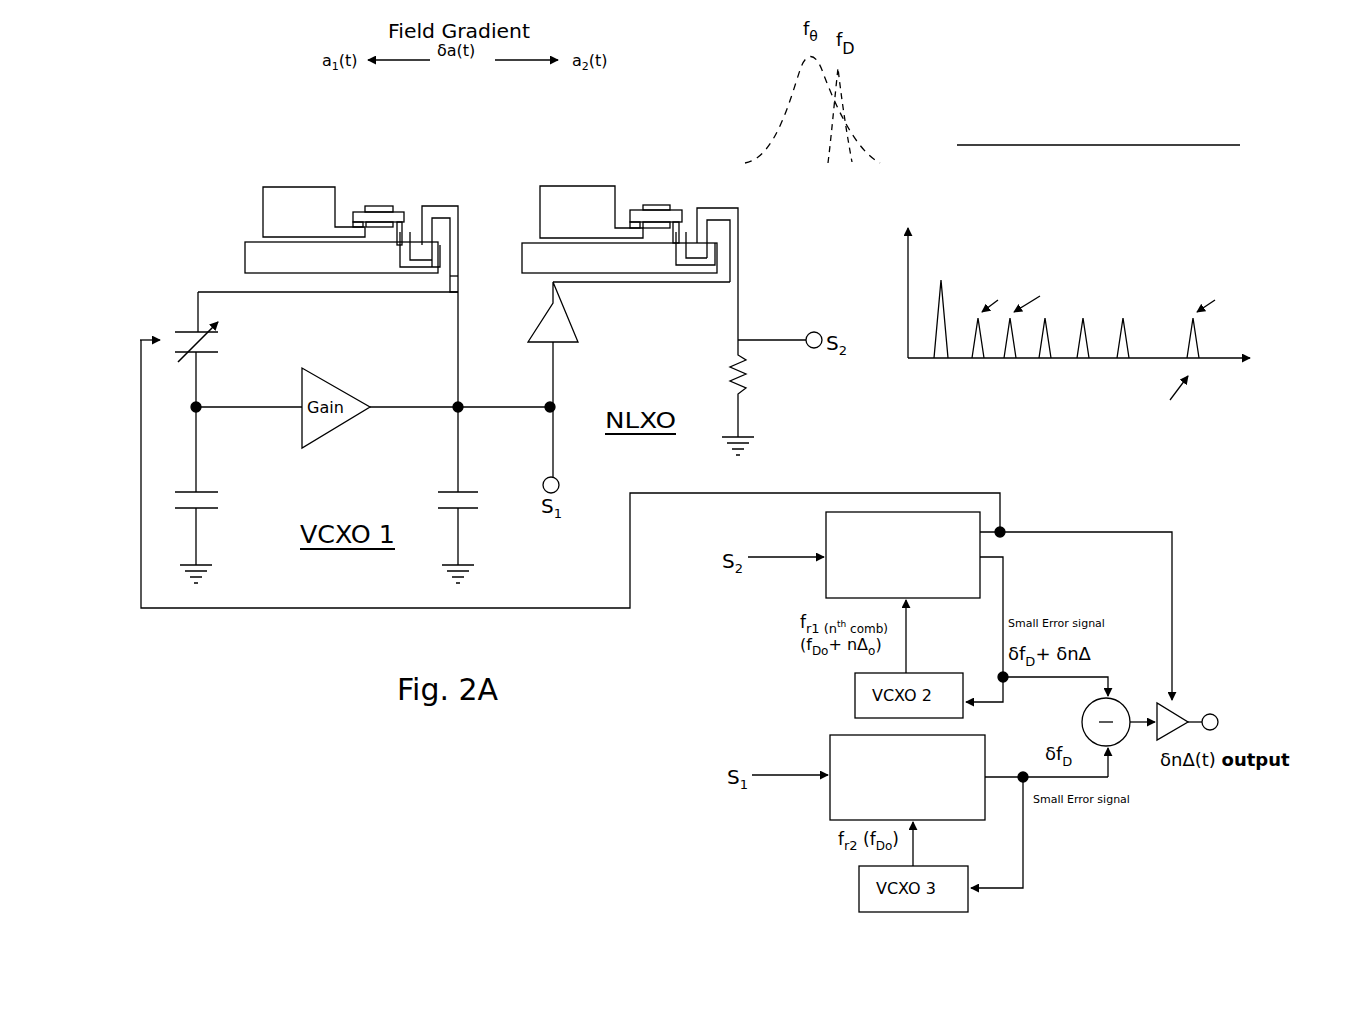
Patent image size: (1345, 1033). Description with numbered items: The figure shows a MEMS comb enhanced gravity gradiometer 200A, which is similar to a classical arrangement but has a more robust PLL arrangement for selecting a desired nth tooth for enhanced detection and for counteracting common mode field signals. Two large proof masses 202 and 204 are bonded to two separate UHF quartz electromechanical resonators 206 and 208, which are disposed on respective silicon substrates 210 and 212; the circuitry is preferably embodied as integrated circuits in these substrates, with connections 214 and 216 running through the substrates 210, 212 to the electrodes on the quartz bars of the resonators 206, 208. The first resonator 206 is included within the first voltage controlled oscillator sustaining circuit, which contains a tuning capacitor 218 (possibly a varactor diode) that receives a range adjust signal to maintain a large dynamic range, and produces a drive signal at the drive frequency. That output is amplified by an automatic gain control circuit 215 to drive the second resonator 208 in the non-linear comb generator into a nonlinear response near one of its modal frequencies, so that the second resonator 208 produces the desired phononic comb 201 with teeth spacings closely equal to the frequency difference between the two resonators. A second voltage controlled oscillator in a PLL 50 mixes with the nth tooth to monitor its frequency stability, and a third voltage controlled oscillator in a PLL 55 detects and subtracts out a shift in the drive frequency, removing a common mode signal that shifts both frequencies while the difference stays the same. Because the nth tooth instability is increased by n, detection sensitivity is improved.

The comb enhanced gravity gradiometer 200A is at (318, 155).
The phononic comb 201 is at (948, 215).
The proof mass 202 is at (276, 208).
The proof mass 204 is at (550, 215).
The first electromechanical resonator 206 is at (402, 204).
The second electromechanical resonator 208 is at (684, 204).
The substrate 210 is at (266, 259).
The substrate 212 is at (549, 262).
The connection 214 is at (462, 275).
The automatic gain control circuit 215 is at (546, 340).
The connection 216 is at (741, 265).
The tuning capacitor 218 is at (212, 343).
The PLL 50 is at (832, 522).
The PLL 55 is at (836, 742).